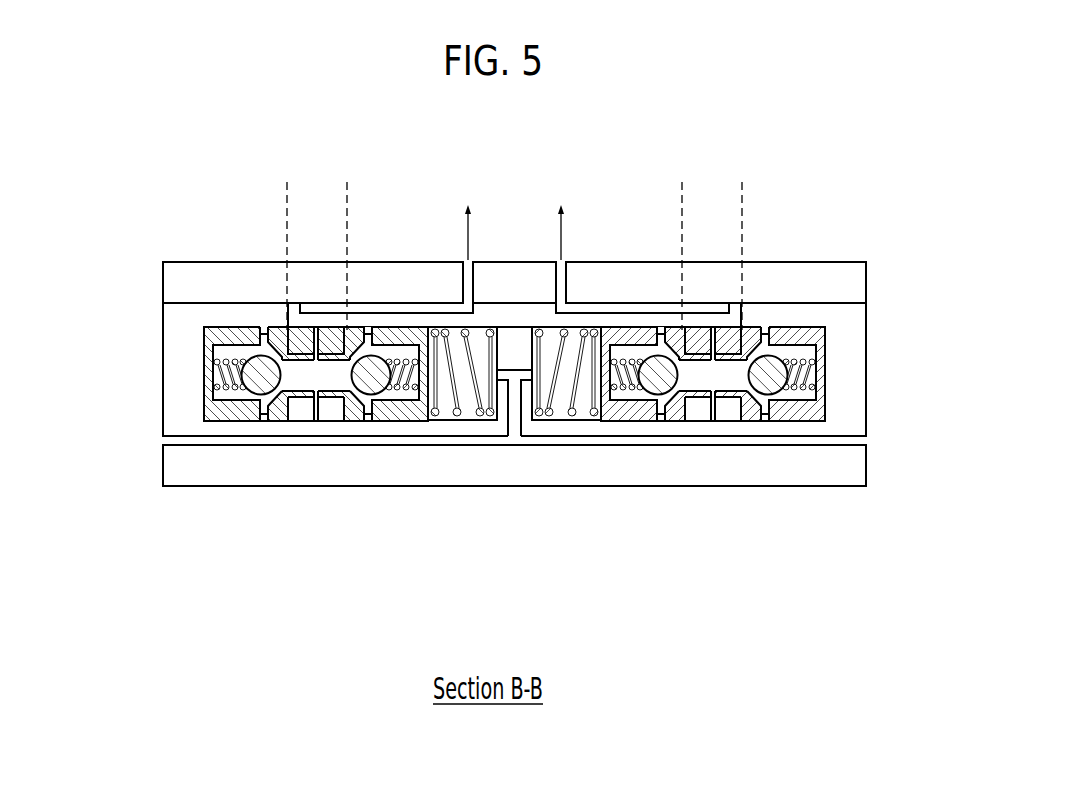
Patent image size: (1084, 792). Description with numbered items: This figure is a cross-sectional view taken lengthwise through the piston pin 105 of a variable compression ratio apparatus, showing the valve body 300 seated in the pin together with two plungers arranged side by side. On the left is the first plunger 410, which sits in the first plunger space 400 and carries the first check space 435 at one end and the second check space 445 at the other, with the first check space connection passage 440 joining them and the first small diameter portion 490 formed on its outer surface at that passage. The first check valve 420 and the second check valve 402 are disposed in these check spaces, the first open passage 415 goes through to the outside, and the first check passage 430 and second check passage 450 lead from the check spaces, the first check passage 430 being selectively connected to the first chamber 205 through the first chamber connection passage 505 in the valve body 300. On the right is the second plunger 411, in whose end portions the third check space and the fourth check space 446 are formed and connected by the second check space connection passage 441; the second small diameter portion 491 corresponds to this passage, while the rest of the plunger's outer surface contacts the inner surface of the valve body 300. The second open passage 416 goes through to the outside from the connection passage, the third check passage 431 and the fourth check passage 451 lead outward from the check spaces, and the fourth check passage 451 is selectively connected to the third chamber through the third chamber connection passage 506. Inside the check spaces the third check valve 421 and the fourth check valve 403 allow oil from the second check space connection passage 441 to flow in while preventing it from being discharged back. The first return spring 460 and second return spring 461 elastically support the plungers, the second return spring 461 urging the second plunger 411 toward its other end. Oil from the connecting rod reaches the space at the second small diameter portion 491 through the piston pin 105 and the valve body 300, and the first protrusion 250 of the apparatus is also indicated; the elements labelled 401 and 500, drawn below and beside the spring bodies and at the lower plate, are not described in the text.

The piston pin 105 is at (491, 363).
The first chamber 205 is at (479, 215).
The first protrusion 250 is at (560, 215).
The valve body 300 is at (172, 357).
The first plunger space 400 is at (440, 413).
The second spring body 401 is at (588, 413).
The second check valve 402 is at (373, 383).
The fourth check valve 403 is at (765, 383).
The first plunger 410 is at (223, 413).
The second plunger 411 is at (790, 413).
The first open passage 415 is at (318, 393).
The second open passage 416 is at (715, 397).
The first check valve 420 is at (261, 383).
The third check valve 421 is at (660, 383).
The first check passage 430 is at (262, 330).
The third check passage 431 is at (665, 330).
The first check space 435 is at (222, 350).
The first check space connection passage 440 is at (293, 382).
The second check space connection passage 441 is at (693, 377).
The second check space 445 is at (400, 397).
The fourth check space 446 is at (808, 350).
The second check passage 450 is at (367, 332).
The fourth check passage 451 is at (771, 332).
The first return spring 460 is at (483, 417).
The second return spring 461 is at (545, 417).
The first small diameter portion 490 is at (347, 178).
The second small diameter portion 491 is at (742, 178).
The base plate 500 is at (170, 440).
The first chamber connection passage 505 is at (297, 318).
The third chamber connection passage 506 is at (733, 318).